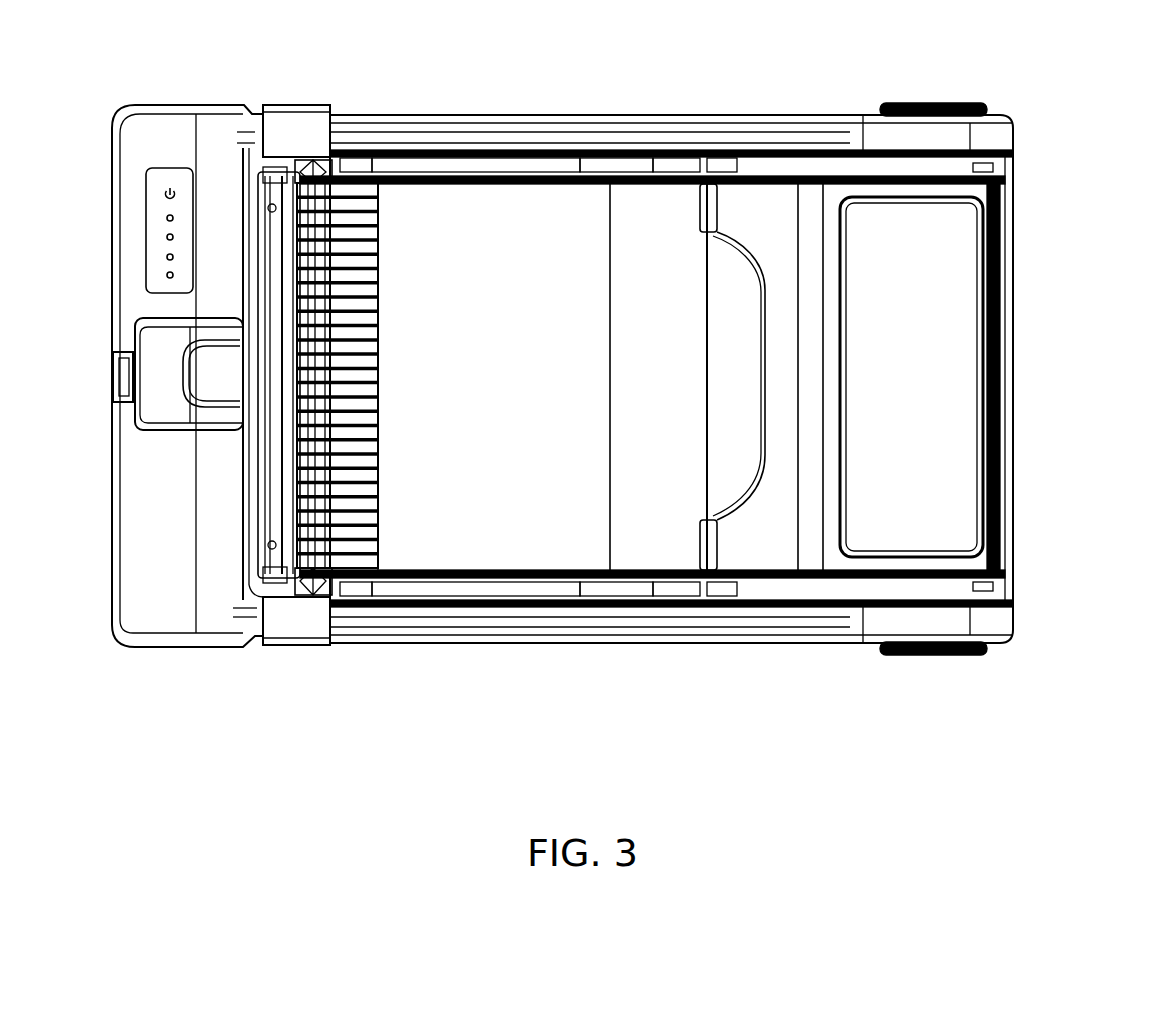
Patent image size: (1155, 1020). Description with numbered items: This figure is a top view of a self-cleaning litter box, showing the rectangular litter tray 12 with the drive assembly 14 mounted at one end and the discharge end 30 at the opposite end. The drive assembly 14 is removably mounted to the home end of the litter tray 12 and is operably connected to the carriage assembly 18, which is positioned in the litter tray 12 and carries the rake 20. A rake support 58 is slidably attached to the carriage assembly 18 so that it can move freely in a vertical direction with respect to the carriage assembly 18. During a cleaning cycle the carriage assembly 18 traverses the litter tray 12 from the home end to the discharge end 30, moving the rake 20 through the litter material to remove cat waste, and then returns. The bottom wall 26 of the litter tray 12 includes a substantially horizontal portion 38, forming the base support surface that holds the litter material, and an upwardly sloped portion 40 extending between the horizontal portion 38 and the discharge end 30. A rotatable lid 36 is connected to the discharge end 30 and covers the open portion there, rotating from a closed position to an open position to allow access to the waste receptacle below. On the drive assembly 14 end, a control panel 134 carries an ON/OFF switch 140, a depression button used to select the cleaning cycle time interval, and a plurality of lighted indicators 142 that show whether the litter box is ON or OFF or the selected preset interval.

The litter tray 12 is at (582, 122).
The drive assembly 14 is at (187, 107).
The carriage assembly 18 is at (293, 107).
The rake 20 is at (363, 253).
The bottom wall 26 is at (626, 512).
The second end 30 is at (916, 118).
The rotatable lid 36 is at (950, 283).
The horizontal portion 38 is at (490, 530).
The upwardly sloped portion 40 is at (700, 303).
The rake support 58 is at (322, 168).
The control panel 134 is at (147, 230).
The ON/OFF switch 140 is at (152, 190).
The lighted indicators 142 is at (160, 266).